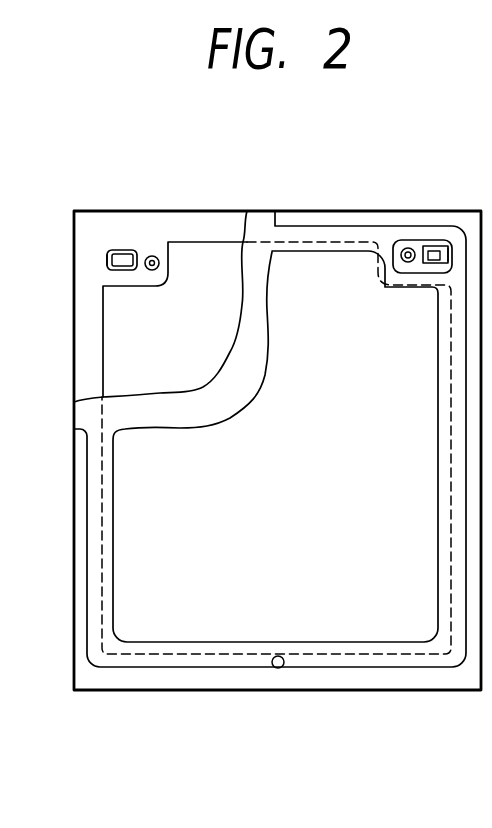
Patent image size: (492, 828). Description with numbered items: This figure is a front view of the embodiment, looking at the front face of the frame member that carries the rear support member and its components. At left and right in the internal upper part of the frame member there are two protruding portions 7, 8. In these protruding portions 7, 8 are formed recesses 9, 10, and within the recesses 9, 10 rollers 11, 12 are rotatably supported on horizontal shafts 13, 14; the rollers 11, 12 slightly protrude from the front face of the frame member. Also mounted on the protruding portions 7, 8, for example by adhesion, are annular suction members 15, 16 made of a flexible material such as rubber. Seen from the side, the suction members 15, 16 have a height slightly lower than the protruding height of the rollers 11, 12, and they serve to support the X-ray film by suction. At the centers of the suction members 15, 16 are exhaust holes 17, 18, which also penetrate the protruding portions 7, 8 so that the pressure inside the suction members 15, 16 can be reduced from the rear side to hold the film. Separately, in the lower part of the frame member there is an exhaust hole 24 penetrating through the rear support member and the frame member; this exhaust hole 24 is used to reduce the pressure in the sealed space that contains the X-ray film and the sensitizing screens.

The protruding portion 7 is at (162, 275).
The protruding portion 8 is at (385, 279).
The recess 9 is at (128, 250).
The recess 10 is at (424, 246).
The roller 11 is at (120, 258).
The roller 12 is at (440, 255).
The horizontal shaft 13 is at (108, 252).
The horizontal shaft 14 is at (449, 256).
The annular suction member 15 is at (154, 256).
The annular suction member 16 is at (395, 243).
The exhaust hole 17 is at (150, 270).
The exhaust hole 18 is at (408, 263).
The exhaust hole 24 is at (277, 656).